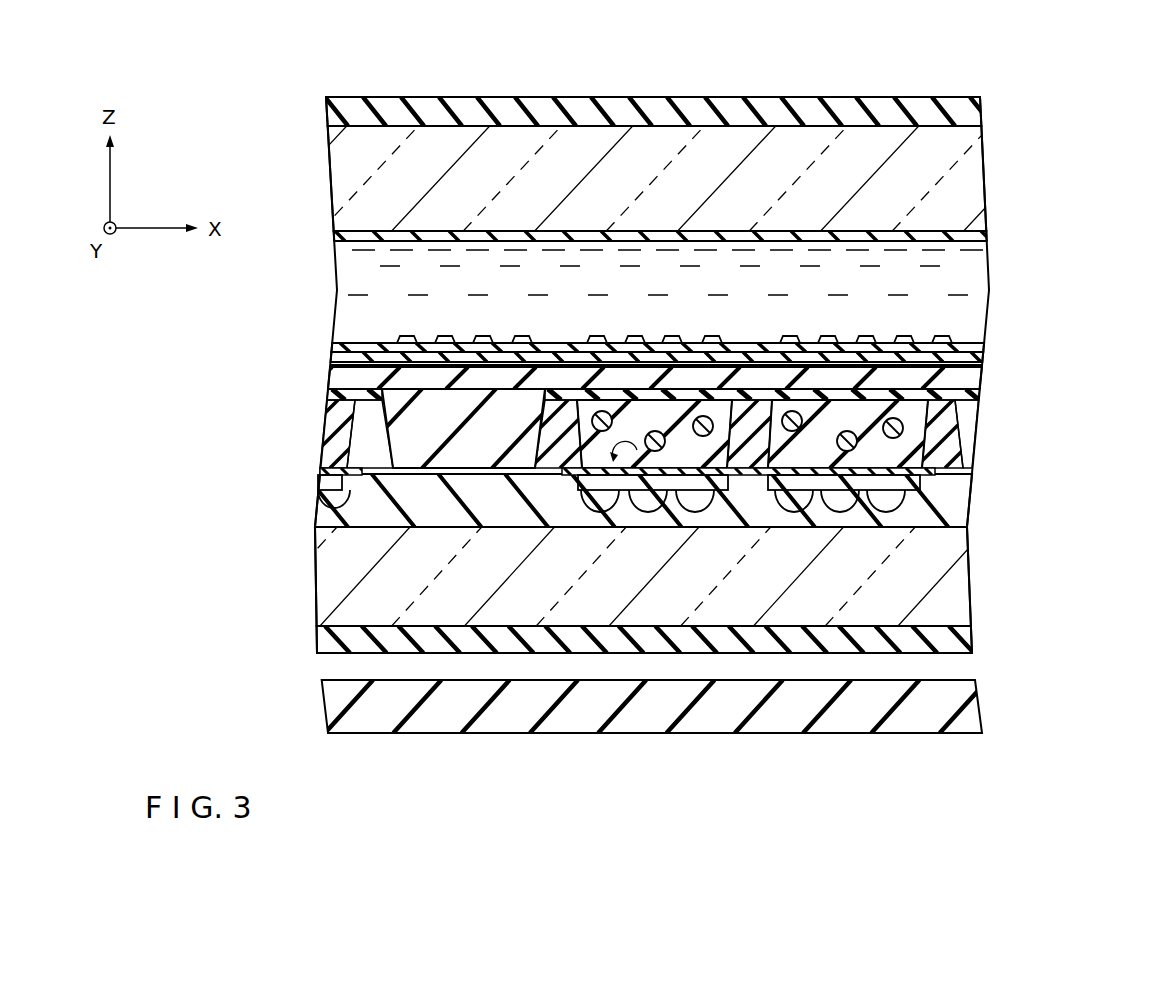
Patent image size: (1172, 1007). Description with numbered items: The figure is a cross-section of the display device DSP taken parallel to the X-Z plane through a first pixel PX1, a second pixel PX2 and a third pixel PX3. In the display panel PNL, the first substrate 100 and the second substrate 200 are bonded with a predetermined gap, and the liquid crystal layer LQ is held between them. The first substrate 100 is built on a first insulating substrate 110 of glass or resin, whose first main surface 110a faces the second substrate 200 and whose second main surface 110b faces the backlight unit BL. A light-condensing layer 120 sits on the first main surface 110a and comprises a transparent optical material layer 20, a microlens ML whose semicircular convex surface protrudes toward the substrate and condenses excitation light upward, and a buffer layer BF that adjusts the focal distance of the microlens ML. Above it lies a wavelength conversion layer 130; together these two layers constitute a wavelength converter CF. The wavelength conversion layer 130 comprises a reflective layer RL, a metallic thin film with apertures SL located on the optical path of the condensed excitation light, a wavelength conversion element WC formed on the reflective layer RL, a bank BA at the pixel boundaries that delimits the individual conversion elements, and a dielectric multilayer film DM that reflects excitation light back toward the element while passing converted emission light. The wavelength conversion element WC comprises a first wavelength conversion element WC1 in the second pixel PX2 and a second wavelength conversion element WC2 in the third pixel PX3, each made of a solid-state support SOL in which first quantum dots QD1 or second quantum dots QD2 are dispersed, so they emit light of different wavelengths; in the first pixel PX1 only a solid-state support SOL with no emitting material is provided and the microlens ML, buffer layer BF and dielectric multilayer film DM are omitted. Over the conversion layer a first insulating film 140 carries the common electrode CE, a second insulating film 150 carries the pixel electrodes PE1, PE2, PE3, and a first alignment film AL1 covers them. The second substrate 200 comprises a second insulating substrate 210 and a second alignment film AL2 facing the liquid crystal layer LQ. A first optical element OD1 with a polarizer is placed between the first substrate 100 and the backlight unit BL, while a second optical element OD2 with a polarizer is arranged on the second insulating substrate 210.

The first pixel PX1 is at (559, 92).
The second pixel PX2 is at (750, 92).
The third pixel PX3 is at (940, 92).
The display device DSP is at (960, 88).
The second optical element OD2 is at (968, 114).
The second insulating substrate 210 is at (968, 180).
The second alignment film AL2 is at (964, 235).
The second substrate 200 is at (671, 169).
The liquid crystal layer LQ is at (310, 282).
The display panel PNL is at (1062, 381).
The pixel electrode PE1 is at (483, 337).
The pixel electrode PE2 is at (675, 338).
The pixel electrode PE3 is at (874, 339).
The first alignment film AL1 is at (958, 348).
The second insulating film 150 is at (970, 357).
The common electrode CE is at (970, 366).
The first insulating film 140 is at (948, 390).
The wavelength conversion layer 130 is at (609, 388).
The wavelength converter CF is at (218, 408).
The dielectric multilayer film DM is at (326, 396).
The bank BA is at (950, 437).
The first quantum dot QD1 is at (653, 430).
The second quantum dot QD2 is at (847, 432).
The solid-state support SOL is at (485, 420).
The light-condensing layer 120 is at (628, 638).
The optical material layer 20 is at (950, 520).
The reflective layer RL is at (328, 470).
The buffer layer BF is at (608, 490).
The microlens ML is at (692, 505).
The aperture SL is at (642, 478).
The wavelength conversion element WC is at (802, 639).
The first wavelength conversion element WC1 is at (709, 456).
The second wavelength conversion element WC2 is at (873, 458).
The first substrate 100 is at (654, 582).
The first main surface 110a is at (317, 528).
The first insulating substrate 110 is at (954, 583).
The second main surface 110b is at (317, 645).
The first optical element OD1 is at (950, 637).
The backlight unit BL is at (958, 693).